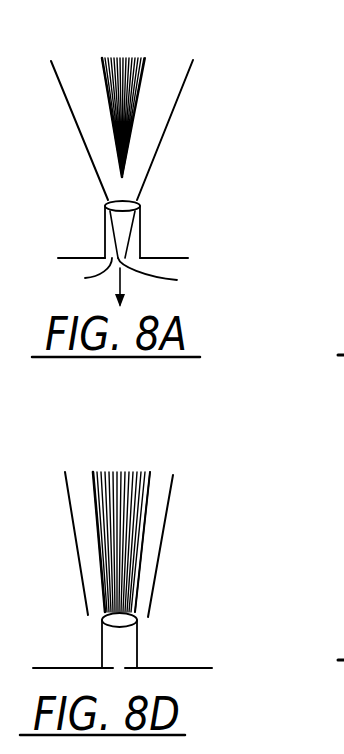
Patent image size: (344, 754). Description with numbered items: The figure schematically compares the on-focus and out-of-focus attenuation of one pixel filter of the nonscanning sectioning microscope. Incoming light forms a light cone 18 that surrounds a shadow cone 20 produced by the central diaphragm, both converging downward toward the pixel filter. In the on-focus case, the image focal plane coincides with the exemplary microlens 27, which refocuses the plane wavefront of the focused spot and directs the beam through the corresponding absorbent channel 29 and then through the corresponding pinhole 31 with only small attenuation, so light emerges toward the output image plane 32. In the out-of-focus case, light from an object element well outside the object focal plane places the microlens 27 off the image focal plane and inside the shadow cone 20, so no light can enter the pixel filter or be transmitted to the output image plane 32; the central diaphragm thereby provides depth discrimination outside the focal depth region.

The light cone 18 is at (186, 84).
The shadow cone 20 is at (143, 63).
The microlens 27 is at (107, 203).
The absorbent channel 29 is at (103, 222).
The pinhole 31 is at (76, 275).
The output image plane 32 is at (157, 279).